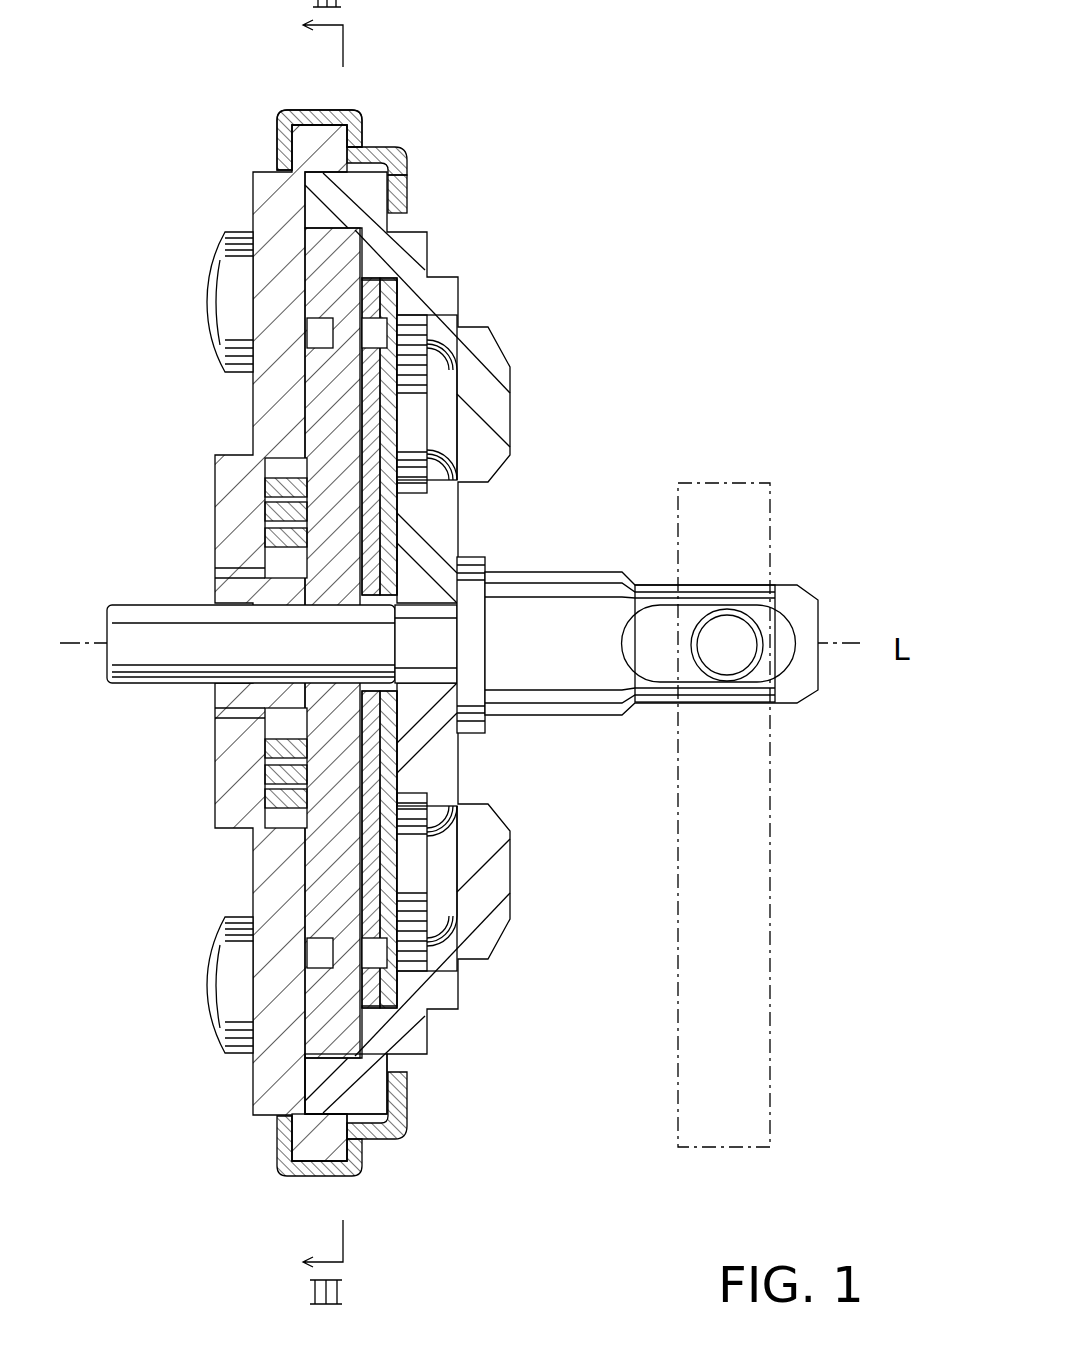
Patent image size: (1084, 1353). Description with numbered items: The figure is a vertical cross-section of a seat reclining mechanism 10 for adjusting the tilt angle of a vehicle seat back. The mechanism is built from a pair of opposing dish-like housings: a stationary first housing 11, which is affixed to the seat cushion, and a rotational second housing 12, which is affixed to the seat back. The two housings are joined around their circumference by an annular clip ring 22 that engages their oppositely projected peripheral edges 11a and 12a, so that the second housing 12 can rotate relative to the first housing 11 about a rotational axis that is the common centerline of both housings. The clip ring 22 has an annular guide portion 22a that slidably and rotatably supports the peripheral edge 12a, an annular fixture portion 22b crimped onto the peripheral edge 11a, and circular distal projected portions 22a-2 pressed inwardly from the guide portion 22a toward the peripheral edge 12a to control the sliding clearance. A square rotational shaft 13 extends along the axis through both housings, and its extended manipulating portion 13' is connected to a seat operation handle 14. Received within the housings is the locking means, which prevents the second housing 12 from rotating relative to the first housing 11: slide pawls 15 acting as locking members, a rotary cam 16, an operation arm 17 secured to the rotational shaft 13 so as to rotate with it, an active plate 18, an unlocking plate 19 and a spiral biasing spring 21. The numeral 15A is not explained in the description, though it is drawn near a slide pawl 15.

The seat reclining mechanism 10 is at (446, 150).
The first housing 11 is at (253, 180).
The peripheral edge 11a is at (307, 1153).
The second housing 12 is at (427, 255).
The peripheral edge 12a is at (380, 1113).
The rotational shaft 13 is at (462, 677).
The extended portion 13' is at (748, 605).
The seat operation handle 14 is at (748, 820).
The slide pawl 15 is at (312, 1005).
The bolt 15A is at (313, 283).
The rotary cam 16 is at (330, 402).
The operation arm 17 is at (345, 540).
The active plate 18 is at (380, 822).
The unlocking plate 19 is at (450, 436).
The biasing spring 21 is at (267, 483).
The clip ring 22 is at (275, 140).
The guide portion 22a is at (385, 140).
The distal projected portion 22a-2 is at (407, 193).
The fixture portion 22b is at (310, 110).